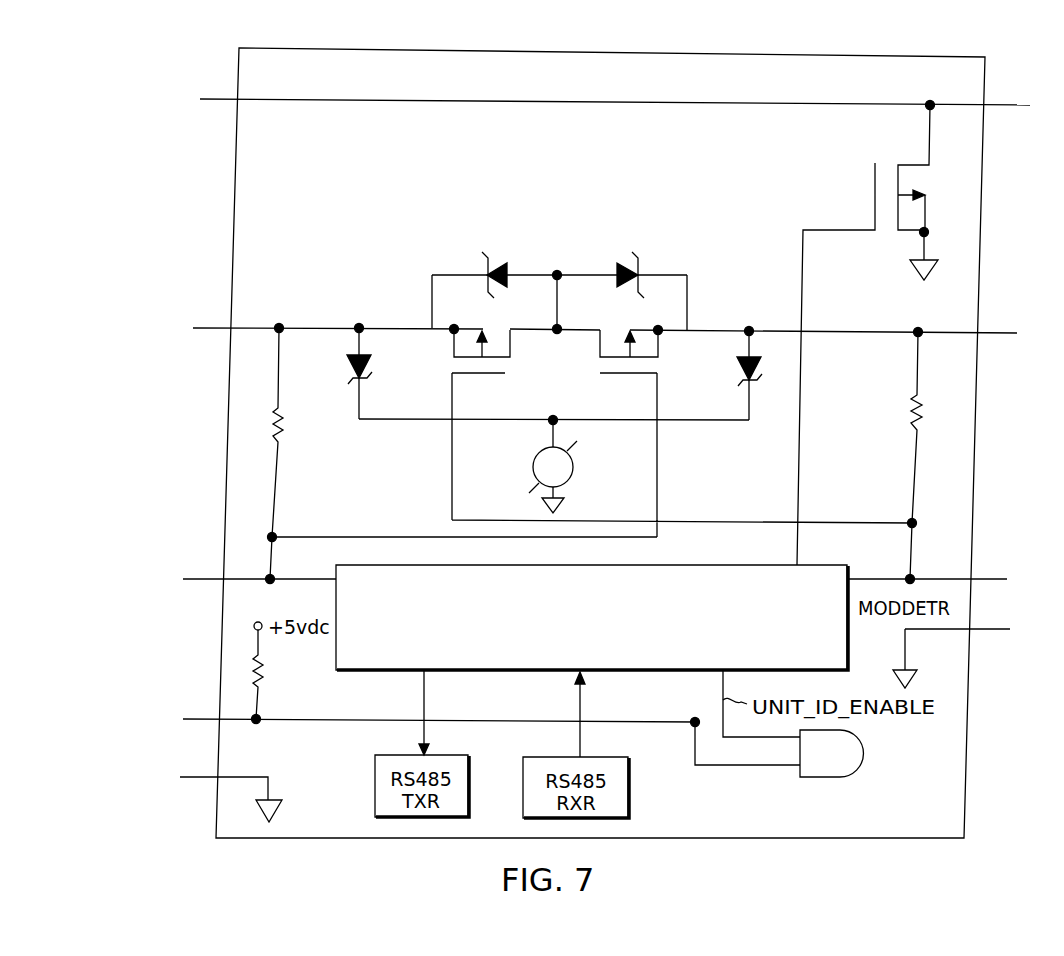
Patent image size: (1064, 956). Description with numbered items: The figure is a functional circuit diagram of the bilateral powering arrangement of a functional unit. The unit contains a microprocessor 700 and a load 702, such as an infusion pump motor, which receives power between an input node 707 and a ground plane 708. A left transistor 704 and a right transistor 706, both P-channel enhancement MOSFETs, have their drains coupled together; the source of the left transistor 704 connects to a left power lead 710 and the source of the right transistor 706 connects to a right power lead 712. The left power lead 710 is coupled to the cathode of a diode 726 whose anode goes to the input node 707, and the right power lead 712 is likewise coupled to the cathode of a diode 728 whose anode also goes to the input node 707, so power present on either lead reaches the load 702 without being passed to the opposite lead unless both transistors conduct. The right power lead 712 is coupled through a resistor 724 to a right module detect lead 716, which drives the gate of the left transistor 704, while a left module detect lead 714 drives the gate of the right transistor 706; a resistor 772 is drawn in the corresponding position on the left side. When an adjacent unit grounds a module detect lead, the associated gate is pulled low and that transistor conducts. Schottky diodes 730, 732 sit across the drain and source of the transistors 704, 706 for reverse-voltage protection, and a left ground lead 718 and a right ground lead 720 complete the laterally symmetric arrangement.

The microprocessor 700 is at (690, 620).
The load 702 is at (575, 468).
The left transistor 704 is at (484, 375).
The right transistor 706 is at (620, 375).
The input node 707 is at (552, 437).
The ground plane 708 is at (563, 506).
The left power lead 710 is at (212, 330).
The right power lead 712 is at (1005, 335).
The left module detect lead 714 is at (205, 581).
The right module detect lead 716 is at (990, 578).
The left ground lead 718 is at (198, 779).
The right ground lead 720 is at (1005, 628).
The resistor 724 is at (912, 420).
The diode 726 is at (372, 362).
The diode 728 is at (745, 365).
The Schottky diode 730 is at (487, 257).
The Schottky diode 732 is at (642, 257).
The resistor 772 is at (290, 432).